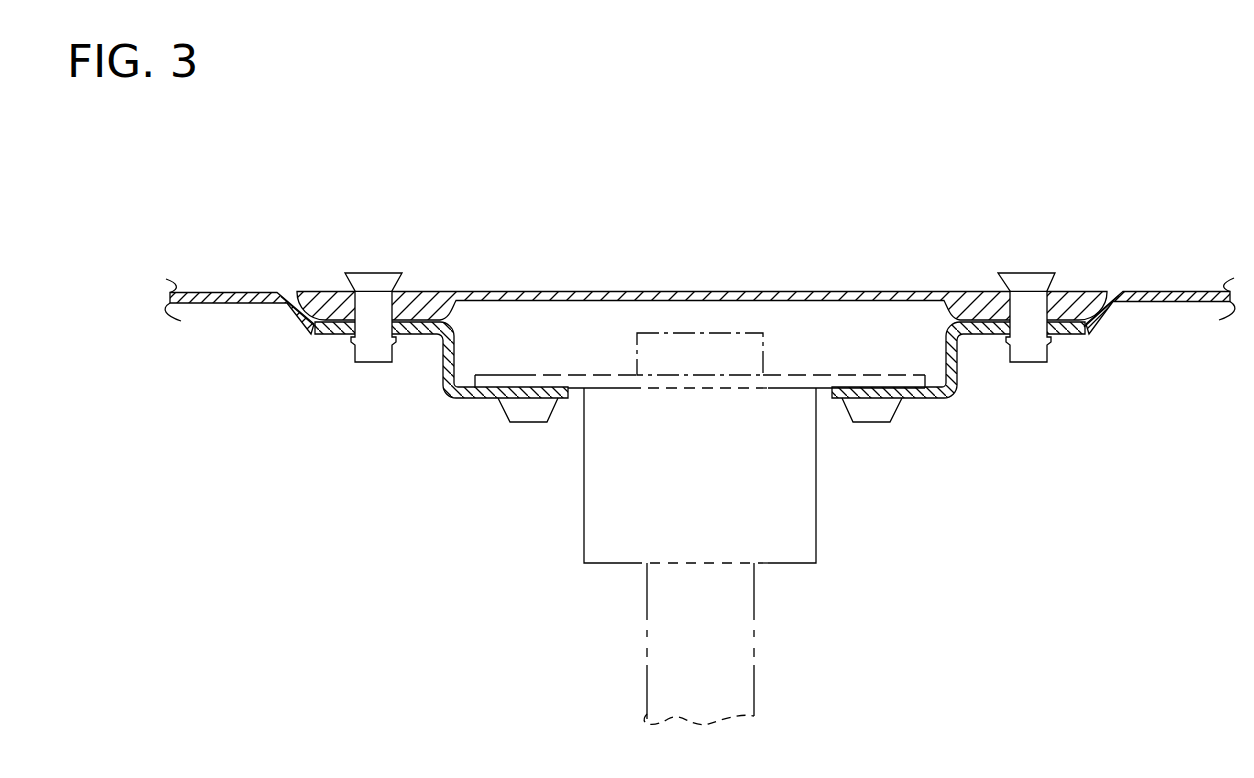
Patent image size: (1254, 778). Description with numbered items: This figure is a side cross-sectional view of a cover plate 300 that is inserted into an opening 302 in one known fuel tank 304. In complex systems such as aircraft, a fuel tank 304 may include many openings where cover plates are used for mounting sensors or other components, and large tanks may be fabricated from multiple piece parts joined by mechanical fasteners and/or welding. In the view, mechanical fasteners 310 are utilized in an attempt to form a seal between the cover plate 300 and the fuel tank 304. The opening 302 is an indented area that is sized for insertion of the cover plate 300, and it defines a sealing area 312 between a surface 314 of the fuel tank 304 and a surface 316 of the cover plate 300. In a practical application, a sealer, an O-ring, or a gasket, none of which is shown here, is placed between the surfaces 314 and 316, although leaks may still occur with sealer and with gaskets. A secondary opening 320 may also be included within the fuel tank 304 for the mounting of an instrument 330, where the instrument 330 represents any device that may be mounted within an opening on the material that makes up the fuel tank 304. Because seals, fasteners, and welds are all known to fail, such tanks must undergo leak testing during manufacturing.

The cover plate 300 is at (702, 291).
The opening 302 is at (494, 352).
The fuel tank 304 is at (1111, 311).
The mechanical fasteners 310 is at (362, 358).
The sealing area 312 is at (475, 320).
The surface 314 is at (318, 328).
The surface 316 is at (326, 322).
The secondary opening 320 is at (571, 433).
The instrument 330 is at (817, 537).